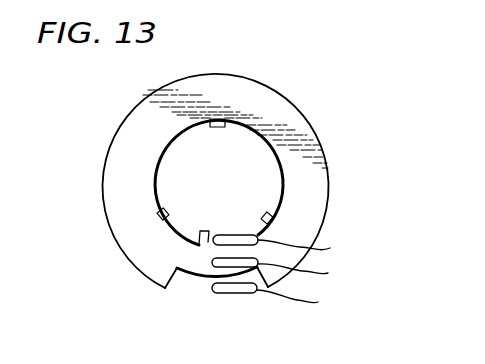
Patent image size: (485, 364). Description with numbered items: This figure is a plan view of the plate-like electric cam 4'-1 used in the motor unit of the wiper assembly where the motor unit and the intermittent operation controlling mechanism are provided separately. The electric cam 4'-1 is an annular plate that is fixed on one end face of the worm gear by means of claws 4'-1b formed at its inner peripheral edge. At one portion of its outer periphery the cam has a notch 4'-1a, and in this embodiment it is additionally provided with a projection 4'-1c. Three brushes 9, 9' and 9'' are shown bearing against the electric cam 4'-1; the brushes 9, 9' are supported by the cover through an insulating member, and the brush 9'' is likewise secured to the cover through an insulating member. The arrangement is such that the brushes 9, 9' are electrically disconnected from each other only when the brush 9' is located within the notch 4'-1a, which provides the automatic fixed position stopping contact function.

The electric cam 4'-1 is at (231, 181).
The notch 4'-1a is at (175, 289).
The claws 4'-1b is at (206, 143).
The projection 4'-1c is at (200, 213).
The brush 9 is at (240, 259).
The brush 9' is at (265, 305).
The brush 9'' is at (271, 215).